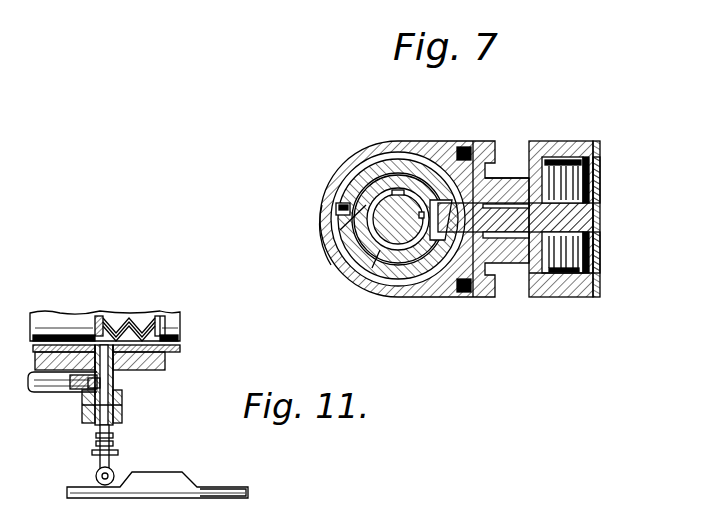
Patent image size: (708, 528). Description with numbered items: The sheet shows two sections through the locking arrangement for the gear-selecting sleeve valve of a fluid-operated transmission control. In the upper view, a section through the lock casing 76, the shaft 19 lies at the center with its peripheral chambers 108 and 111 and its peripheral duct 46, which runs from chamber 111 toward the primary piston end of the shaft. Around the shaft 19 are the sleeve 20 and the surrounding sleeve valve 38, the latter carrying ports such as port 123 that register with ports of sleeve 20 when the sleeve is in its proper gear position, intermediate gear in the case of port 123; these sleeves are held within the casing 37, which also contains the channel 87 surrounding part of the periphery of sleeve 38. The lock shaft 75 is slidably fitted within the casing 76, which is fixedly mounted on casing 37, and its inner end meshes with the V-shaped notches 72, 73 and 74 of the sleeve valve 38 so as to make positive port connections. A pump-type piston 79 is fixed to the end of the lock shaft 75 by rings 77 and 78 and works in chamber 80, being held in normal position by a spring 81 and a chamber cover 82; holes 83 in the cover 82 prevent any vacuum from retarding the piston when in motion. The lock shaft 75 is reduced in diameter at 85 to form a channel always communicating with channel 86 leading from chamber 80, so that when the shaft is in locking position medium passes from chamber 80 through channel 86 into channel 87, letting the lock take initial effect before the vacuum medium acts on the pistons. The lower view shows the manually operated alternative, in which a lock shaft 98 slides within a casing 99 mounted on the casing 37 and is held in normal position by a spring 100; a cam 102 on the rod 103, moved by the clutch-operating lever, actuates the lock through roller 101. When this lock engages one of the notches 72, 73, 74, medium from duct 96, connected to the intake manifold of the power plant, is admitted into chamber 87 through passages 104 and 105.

In FIG. 7, the shaft 19 is at (362, 238).
In FIG. 7, the sleeve 20 is at (350, 252).
In FIG. 7, the casing 37 is at (395, 297).
In FIG. 11, the casing 37 is at (181, 349).
In FIG. 7, the sleeve valve 38 is at (362, 284).
In FIG. 11, the sleeve valve 38 is at (176, 328).
In FIG. 7, the duct 46 is at (437, 197).
In FIG. 7, the V-shaped notch 72 is at (466, 147).
In FIG. 11, the V-shaped notch 72 is at (106, 303).
In FIG. 11, the V-shaped notch 73 is at (130, 320).
In FIG. 11, the V-shaped notch 74 is at (157, 318).
In FIG. 7, the lock shaft 75 is at (468, 296).
In FIG. 7, the casing 76 is at (520, 185).
In FIG. 7, the ring 77 is at (594, 132).
In FIG. 7, the ring 78 is at (600, 168).
In FIG. 7, the piston 79 is at (598, 217).
In FIG. 7, the chamber 80 is at (567, 280).
In FIG. 7, the spring 81 is at (562, 172).
In FIG. 7, the chamber cover 82 is at (600, 290).
In FIG. 7, the hole 83 is at (600, 183).
In FIG. 7, the reduced diameter portion 85 is at (508, 203).
In FIG. 7, the channel 86 is at (529, 262).
In FIG. 7, the channel 87 is at (374, 162).
In FIG. 11, the channel 87 is at (150, 370).
In FIG. 11, the duct 96 is at (62, 392).
In FIG. 11, the lock shaft 98 is at (122, 395).
In FIG. 11, the casing 99 is at (122, 410).
In FIG. 11, the spring 100 is at (116, 440).
In FIG. 11, the roller 101 is at (96, 478).
In FIG. 11, the cam 102 is at (180, 473).
In FIG. 11, the rod 103 is at (239, 487).
In FIG. 11, the passage 104 is at (90, 398).
In FIG. 11, the passage 105 is at (114, 376).
In FIG. 7, the channel 108 is at (364, 174).
In FIG. 7, the chamber 111 is at (420, 183).
In FIG. 7, the port 123 is at (336, 208).